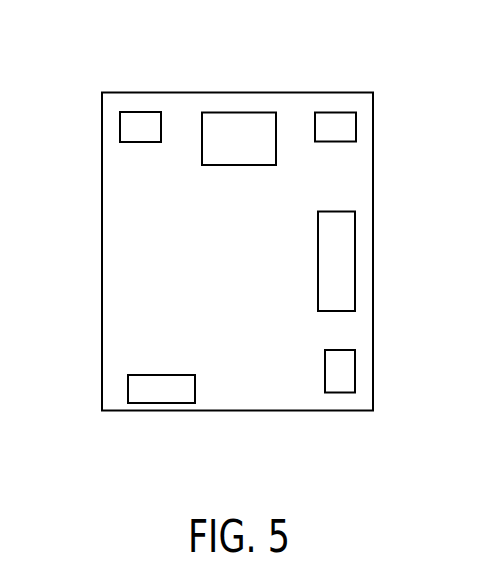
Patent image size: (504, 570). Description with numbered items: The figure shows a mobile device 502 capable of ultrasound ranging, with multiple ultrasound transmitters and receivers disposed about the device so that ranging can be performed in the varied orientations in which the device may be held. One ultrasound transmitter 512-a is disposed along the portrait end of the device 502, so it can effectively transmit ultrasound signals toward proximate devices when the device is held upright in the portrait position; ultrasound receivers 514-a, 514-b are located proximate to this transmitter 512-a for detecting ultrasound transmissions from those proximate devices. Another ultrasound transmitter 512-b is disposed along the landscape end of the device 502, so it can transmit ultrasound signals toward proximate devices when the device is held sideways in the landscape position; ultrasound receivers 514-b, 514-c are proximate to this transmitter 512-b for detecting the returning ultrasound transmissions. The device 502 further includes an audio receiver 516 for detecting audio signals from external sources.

The device 502 is at (142, 93).
The ultrasound receiver 514-a is at (120, 122).
The ultrasound transmitter 512-a is at (245, 112).
The ultrasound receiver 514-b is at (356, 123).
The ultrasound transmitter 512-b is at (355, 260).
The ultrasound receiver 514-c is at (355, 368).
The audio receiver 516 is at (162, 403).